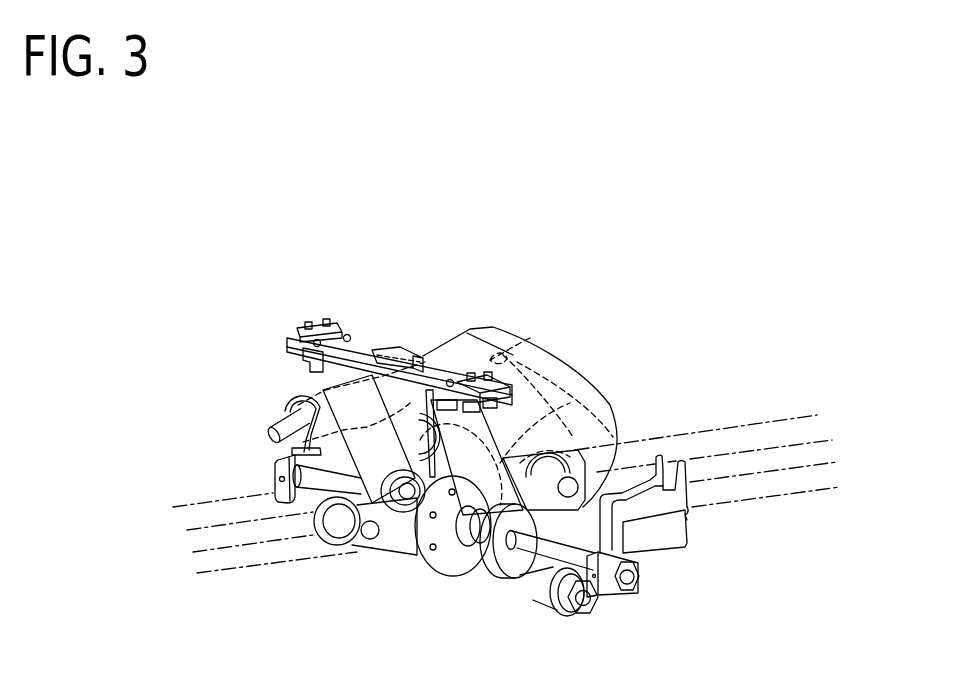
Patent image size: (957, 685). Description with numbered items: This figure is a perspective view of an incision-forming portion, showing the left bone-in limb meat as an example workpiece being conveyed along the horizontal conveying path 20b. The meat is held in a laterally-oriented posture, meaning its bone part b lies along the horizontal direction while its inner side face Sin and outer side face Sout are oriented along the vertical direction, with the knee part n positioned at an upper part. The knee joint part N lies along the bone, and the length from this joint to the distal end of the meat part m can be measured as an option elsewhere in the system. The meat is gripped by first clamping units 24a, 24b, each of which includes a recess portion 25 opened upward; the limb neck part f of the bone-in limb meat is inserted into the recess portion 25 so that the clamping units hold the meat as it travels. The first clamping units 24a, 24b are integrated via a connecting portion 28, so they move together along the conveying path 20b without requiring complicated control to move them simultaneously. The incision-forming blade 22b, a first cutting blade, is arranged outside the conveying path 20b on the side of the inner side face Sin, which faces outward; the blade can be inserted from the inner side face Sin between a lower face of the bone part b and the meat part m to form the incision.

The conveying path 20b is at (803, 477).
The limb neck part f is at (302, 418).
The first clamping unit 24b is at (297, 397).
The connecting portion 28 is at (447, 528).
The inner side face Sin is at (463, 553).
The first clamping unit 24a is at (667, 537).
The recess portion 25 is at (672, 465).
The incision-forming blade 22b is at (400, 347).
The meat part m is at (608, 430).
The bone part b is at (600, 410).
The knee joint part N is at (530, 338).
The outer side face Sout is at (523, 437).
The knee part n is at (490, 328).